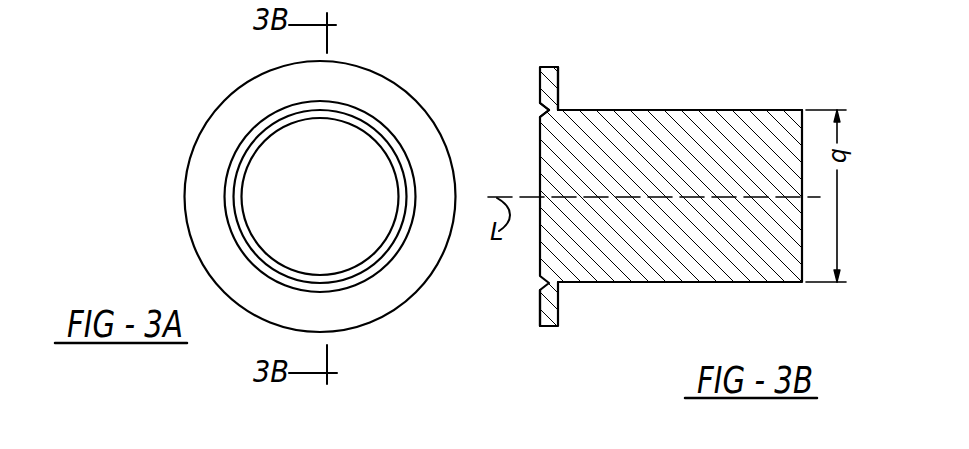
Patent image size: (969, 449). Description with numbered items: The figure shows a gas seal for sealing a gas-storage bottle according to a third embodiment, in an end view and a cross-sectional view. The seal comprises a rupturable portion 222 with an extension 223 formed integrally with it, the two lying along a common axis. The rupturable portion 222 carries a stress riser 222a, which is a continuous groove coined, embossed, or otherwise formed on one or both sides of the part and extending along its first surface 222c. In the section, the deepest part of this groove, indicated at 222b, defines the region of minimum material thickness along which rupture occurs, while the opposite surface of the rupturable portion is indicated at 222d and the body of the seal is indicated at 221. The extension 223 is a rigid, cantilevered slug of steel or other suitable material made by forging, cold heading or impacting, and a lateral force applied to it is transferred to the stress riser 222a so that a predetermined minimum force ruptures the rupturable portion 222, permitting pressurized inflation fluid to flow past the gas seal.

In FIG. 3A, the bushing body 221 is at (417, 356).
In FIG. 3B, the bushing body 221 is at (735, 330).
In FIG. 3A, the rupturable portion 222 is at (240, 86).
In FIG. 3B, the rupturable portion 222 is at (557, 325).
In FIG. 3A, the stress riser 222a is at (337, 101).
In FIG. 3B, the stress riser 222a is at (541, 106).
In FIG. 3A, the second notch surface 222b is at (372, 123).
In FIG. 3B, the second notch surface 222b is at (546, 112).
In FIG. 3A, the first surface 222c is at (222, 132).
In FIG. 3B, the first surface 222c is at (540, 308).
In FIG. 3B, the flange inner face 222d is at (558, 82).
In FIG. 3B, the extension 223 is at (673, 110).